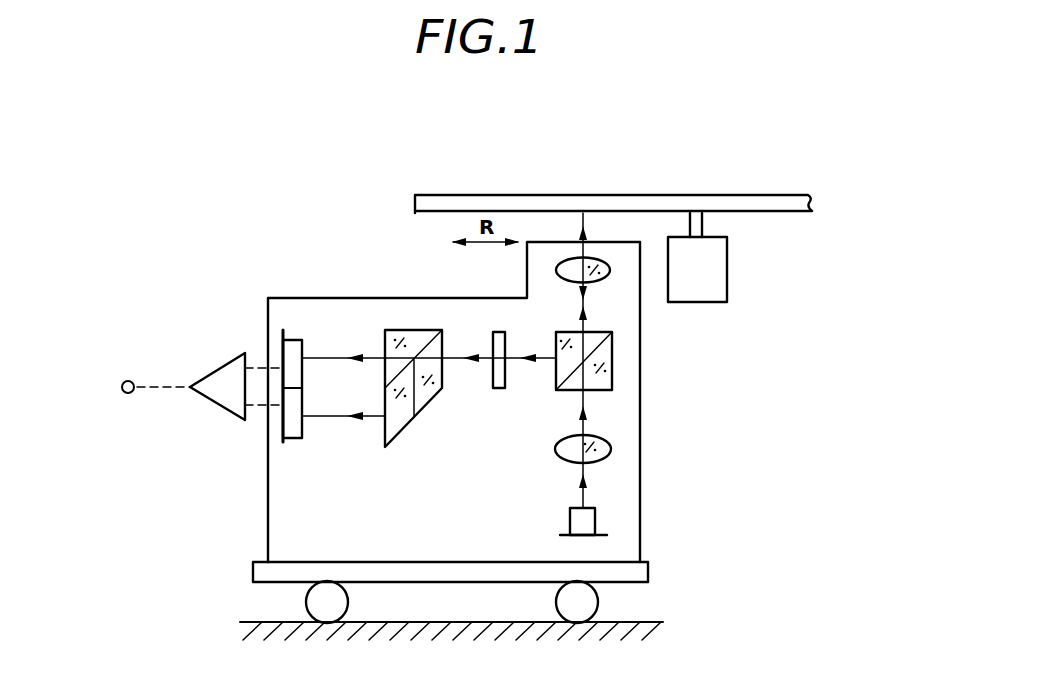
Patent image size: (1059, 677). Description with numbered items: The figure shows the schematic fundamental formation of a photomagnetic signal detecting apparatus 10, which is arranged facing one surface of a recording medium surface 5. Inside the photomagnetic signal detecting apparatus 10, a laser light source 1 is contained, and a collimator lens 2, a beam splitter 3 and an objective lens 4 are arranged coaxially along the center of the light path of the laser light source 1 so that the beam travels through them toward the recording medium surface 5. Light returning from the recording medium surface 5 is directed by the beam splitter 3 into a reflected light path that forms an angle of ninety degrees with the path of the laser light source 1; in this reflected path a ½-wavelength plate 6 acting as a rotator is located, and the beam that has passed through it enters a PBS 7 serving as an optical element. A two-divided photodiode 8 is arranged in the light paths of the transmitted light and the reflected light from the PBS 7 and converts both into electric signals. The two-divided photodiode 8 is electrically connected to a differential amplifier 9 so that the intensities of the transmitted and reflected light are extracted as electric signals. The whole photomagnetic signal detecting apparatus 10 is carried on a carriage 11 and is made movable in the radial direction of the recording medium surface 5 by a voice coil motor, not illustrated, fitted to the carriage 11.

The laser light source 1 is at (596, 517).
The collimator lens 2 is at (611, 449).
The beam splitter 3 is at (610, 378).
The objective lens 4 is at (608, 274).
The recording medium surface 5 is at (667, 195).
The ½-wavelength plate 6 is at (491, 342).
The PBS 7 is at (410, 316).
The two-divided photodiode 8 is at (285, 425).
The differential amplifier 9 is at (226, 378).
The photomagnetic signal detecting apparatus 10 is at (666, 551).
The carriage 11 is at (253, 572).